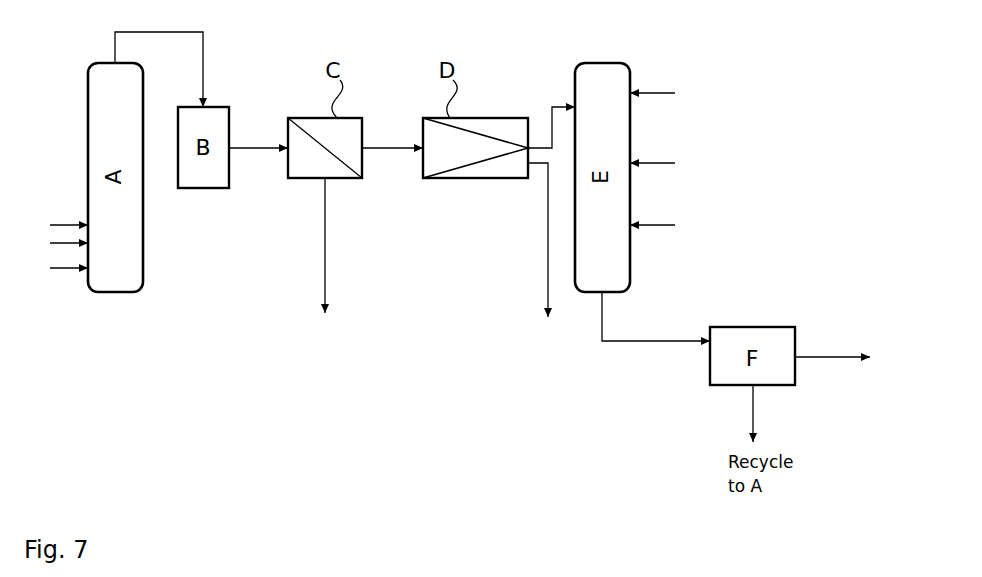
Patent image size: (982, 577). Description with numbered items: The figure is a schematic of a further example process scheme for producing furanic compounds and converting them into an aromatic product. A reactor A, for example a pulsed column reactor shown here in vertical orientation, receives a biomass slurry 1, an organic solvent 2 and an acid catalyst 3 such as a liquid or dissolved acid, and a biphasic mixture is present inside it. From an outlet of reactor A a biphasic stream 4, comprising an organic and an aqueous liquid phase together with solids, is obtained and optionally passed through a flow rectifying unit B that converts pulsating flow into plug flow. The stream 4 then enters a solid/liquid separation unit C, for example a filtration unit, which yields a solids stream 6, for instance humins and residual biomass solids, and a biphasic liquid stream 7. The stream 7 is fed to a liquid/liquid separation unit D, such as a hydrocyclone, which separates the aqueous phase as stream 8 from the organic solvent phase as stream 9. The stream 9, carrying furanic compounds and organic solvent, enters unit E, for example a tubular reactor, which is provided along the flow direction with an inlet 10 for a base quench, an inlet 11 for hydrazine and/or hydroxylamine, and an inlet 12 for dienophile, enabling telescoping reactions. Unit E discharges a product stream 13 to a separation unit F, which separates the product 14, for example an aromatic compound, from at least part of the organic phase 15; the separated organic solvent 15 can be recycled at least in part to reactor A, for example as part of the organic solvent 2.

The biomass slurry 1 is at (62, 225).
The organic solvent 2 is at (62, 243).
The acid catalyst 3 is at (62, 268).
The biphasic stream 4 is at (203, 72).
The solids stream 6 is at (325, 265).
The biphasic liquid stream 7 is at (390, 148).
The aqueous phase stream 8 is at (548, 270).
The organic solvent phase stream 9 is at (545, 107).
The inlet for base quench 10 is at (669, 94).
The inlet for hydrazine and/or hydroxylamine 11 is at (669, 164).
The inlet for dienophile 12 is at (669, 226).
The product stream 13 is at (670, 338).
The product 14 is at (818, 352).
The organic phase 15 is at (753, 415).